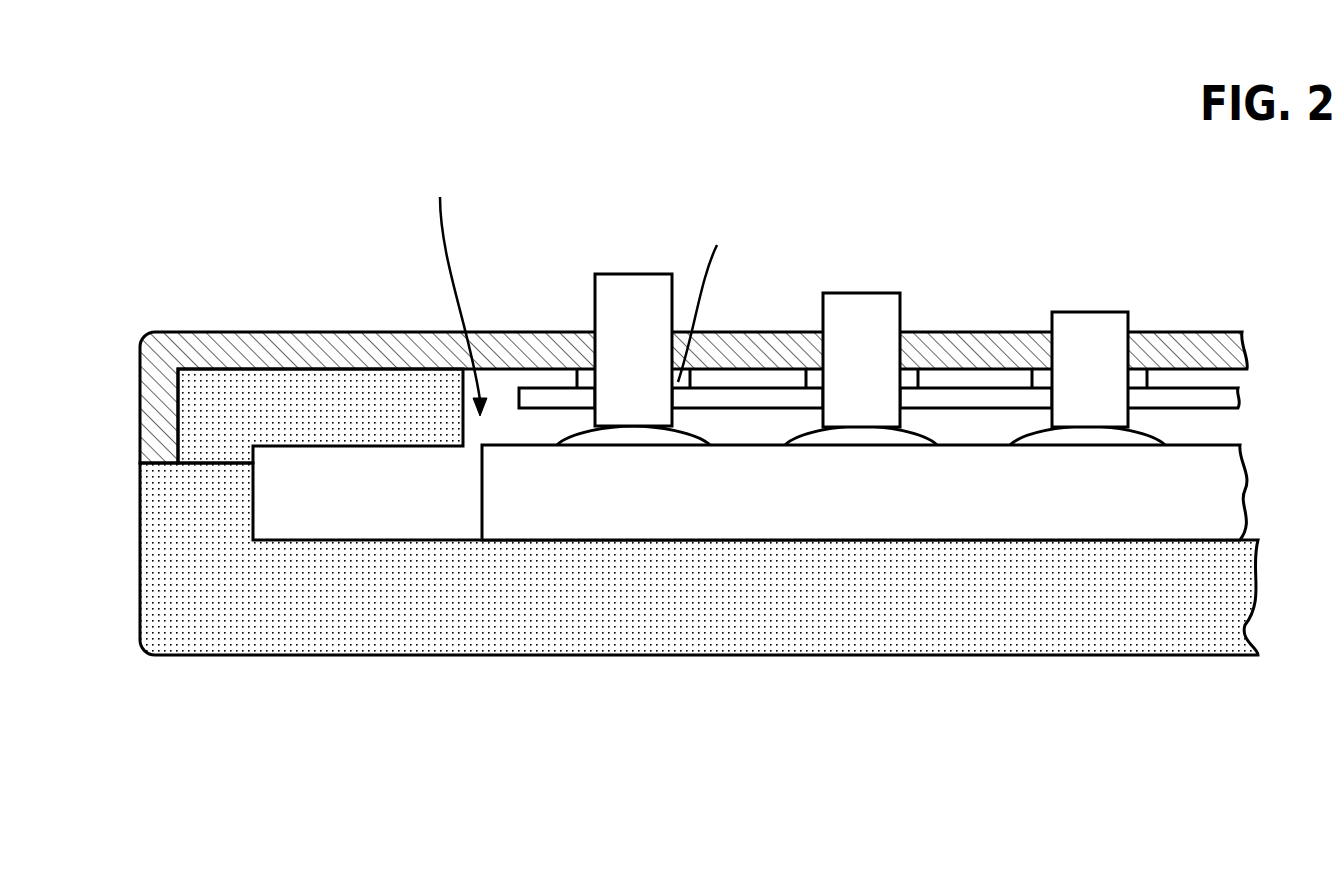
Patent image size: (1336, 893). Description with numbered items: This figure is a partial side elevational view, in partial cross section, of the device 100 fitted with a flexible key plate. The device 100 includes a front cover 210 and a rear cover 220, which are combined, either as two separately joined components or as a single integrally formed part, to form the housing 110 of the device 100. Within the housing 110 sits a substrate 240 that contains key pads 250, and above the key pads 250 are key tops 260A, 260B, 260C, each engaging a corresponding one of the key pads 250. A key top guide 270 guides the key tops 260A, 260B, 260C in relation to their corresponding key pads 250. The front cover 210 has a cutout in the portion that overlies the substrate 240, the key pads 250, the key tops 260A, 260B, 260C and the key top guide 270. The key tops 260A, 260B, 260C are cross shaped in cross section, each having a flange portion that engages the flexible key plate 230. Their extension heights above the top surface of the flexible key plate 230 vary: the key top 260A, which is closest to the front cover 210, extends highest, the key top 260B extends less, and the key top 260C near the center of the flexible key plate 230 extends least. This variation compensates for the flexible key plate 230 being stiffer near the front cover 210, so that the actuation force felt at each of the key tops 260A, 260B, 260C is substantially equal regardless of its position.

The device 100 is at (238, 81).
The housing 110 is at (140, 497).
The front cover 210 is at (413, 405).
The rear cover 220 is at (1097, 623).
The flexible key plate 230 is at (213, 350).
The substrate 240 is at (1238, 493).
The key pads 250 is at (1087, 435).
The key top 260A is at (630, 333).
The key top 260B is at (862, 335).
The key top 260C is at (1092, 333).
The key top guide 270 is at (1237, 398).